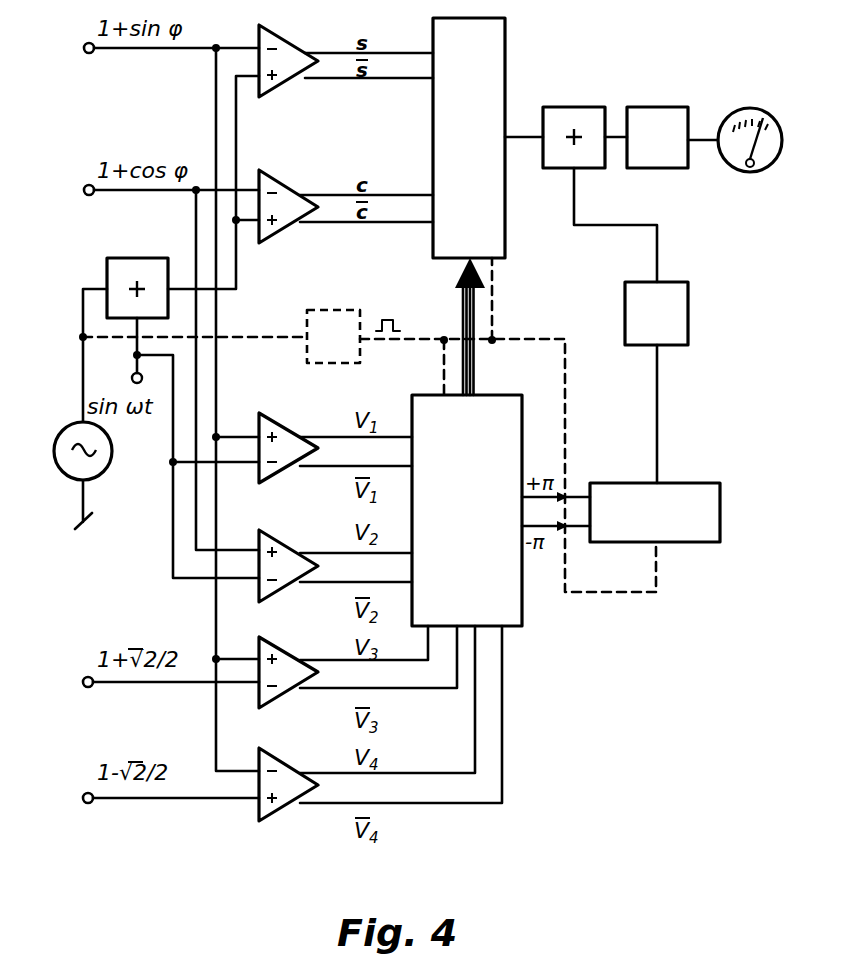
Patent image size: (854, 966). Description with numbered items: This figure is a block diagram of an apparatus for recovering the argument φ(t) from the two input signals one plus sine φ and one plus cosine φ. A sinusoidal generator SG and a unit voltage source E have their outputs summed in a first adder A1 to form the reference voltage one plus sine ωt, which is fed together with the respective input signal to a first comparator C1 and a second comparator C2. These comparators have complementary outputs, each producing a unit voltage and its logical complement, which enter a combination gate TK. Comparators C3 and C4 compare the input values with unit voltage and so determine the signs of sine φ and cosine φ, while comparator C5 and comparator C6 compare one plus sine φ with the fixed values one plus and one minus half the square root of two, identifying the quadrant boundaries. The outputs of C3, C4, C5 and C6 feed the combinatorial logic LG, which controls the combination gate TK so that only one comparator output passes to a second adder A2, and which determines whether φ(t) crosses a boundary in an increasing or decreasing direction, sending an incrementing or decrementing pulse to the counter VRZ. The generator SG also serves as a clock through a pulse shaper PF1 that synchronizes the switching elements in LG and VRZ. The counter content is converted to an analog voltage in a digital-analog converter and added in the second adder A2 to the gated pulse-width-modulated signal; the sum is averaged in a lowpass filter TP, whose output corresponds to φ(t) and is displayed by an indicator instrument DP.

The first comparator C1 is at (278, 86).
The second comparator C2 is at (278, 232).
The comparator C3 is at (278, 472).
The comparator C4 is at (278, 591).
The comparator C5 is at (278, 697).
The comparator C6 is at (278, 810).
The first adder A1 is at (132, 264).
The second adder A2 is at (568, 118).
The combination gate TK is at (469, 138).
The lowpass filter TP is at (657, 137).
The indicator instrument DP is at (763, 162).
The combinatorial logic LG is at (467, 510).
The counter VRZ is at (655, 512).
The pulse shaper PF1 is at (333, 336).
The sinusoidal generator SG is at (96, 461).
The unit voltage source E is at (142, 380).